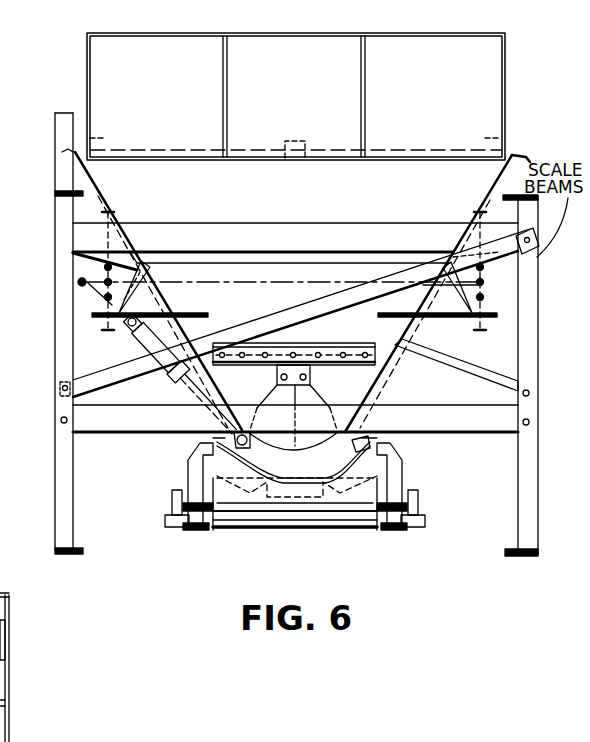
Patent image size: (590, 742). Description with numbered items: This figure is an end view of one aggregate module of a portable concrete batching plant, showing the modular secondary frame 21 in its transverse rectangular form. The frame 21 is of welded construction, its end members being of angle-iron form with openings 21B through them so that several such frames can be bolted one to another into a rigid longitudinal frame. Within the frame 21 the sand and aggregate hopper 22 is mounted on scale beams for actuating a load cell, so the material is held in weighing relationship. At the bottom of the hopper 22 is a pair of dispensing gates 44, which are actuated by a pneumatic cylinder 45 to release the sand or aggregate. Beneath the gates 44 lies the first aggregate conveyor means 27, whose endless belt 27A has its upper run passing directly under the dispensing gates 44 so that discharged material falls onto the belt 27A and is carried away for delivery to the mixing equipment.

The modular secondary frame 21 is at (62, 216).
The openings 21B is at (61, 419).
The aggregate hopper 22 is at (311, 196).
The first aggregate conveyor means 27 is at (395, 478).
The endless belt 27A is at (263, 531).
The dispensing gates 44 is at (297, 449).
The pneumatic cylinder 45 is at (173, 378).